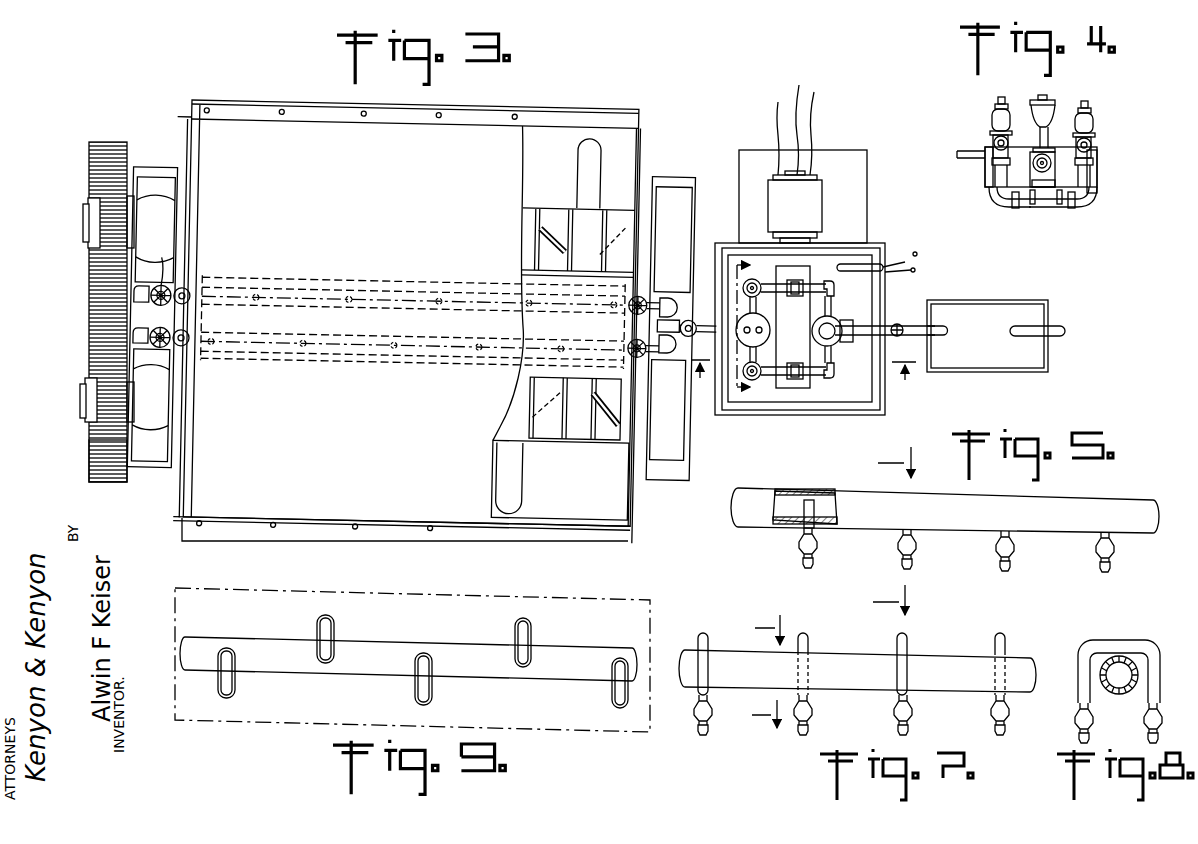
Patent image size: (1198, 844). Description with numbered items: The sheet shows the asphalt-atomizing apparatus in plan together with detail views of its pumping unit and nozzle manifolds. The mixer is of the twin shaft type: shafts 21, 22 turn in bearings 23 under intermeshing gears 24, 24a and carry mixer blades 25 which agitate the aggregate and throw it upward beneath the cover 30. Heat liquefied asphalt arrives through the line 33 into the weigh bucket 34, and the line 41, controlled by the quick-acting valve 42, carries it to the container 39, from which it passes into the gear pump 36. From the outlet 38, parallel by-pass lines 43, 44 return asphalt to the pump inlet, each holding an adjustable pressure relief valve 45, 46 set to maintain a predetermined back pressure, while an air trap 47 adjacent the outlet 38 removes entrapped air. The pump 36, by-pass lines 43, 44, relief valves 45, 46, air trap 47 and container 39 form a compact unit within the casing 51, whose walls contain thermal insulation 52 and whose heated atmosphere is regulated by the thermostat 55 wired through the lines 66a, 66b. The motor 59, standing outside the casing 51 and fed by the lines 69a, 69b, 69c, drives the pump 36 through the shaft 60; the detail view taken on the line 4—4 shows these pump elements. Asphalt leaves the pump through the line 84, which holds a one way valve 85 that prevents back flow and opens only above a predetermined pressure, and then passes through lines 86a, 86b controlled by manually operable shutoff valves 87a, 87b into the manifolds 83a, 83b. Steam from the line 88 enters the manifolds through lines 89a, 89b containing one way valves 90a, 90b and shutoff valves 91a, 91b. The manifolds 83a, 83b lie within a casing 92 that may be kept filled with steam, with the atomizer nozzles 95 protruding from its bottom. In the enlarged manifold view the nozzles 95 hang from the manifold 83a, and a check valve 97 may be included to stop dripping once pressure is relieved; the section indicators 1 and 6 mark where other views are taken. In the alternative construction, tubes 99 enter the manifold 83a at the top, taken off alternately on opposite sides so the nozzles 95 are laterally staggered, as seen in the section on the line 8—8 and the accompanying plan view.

In FIG. 3, the section line 1- 1 is at (804, 387).
In FIG. 3, the line 4— 4 is at (752, 327).
In FIG. 5, the section line 6- 6 is at (884, 531).
In FIG. 7, the line 8— 8 is at (757, 671).
In FIG. 3, the shaft 21 is at (84, 399).
In FIG. 3, the shaft 22 is at (87, 224).
In FIG. 3, the bearings 23 is at (430, 341).
In FIG. 3, the intermeshing gear 24 is at (94, 278).
In FIG. 3, the intermeshing gear 24a is at (96, 454).
In FIG. 3, the mixer blades 25 is at (548, 326).
In FIG. 3, the cover 30 is at (405, 304).
In FIG. 3, the line 33 is at (1062, 330).
In FIG. 3, the weigh bucket 34 is at (1014, 300).
In FIG. 3, the gear pump 36 is at (776, 395).
In FIG. 4, the gear pump 36 is at (985, 176).
In FIG. 4, the outlet 38 is at (1060, 150).
In FIG. 3, the container 39 is at (835, 342).
In FIG. 3, the line 41 is at (943, 330).
In FIG. 3, the valve 42 is at (898, 323).
In FIG. 3, the by-pass line 43 is at (830, 287).
In FIG. 4, the by-pass line 43 is at (992, 138).
In FIG. 3, the by-pass line 44 is at (830, 376).
In FIG. 4, the by-pass line 44 is at (1093, 142).
In FIG. 3, the pressure relief valve 45 is at (762, 294).
In FIG. 4, the pressure relief valve 45 is at (994, 114).
In FIG. 3, the pressure relief valve 46 is at (762, 368).
In FIG. 4, the pressure relief valve 46 is at (1095, 122).
In FIG. 3, the air trap 47 is at (771, 330).
In FIG. 4, the air trap 47 is at (1050, 106).
In FIG. 3, the casing 51 is at (837, 412).
In FIG. 3, the thermal insulation 52 is at (797, 405).
In FIG. 3, the thermostat 55 is at (880, 250).
In FIG. 3, the motor 59 is at (812, 195).
In FIG. 3, the shaft 60 is at (810, 250).
In FIG. 4, the shaft 60 is at (957, 155).
In FIG. 3, the line 66a is at (917, 254).
In FIG. 3, the line 66b is at (915, 271).
In FIG. 3, the line 69a is at (800, 88).
In FIG. 3, the line 69b is at (815, 105).
In FIG. 3, the line 69c is at (778, 112).
In FIG. 3, the manifold 83a is at (414, 277).
In FIG. 5, the manifold 83a is at (1122, 500).
In FIG. 7, the manifold 83a is at (857, 671).
In FIG. 8, the manifold 83a is at (1117, 695).
In FIG. 9, the manifold 83a is at (462, 648).
In FIG. 3, the manifold 83b is at (412, 368).
In FIG. 3, the line 84 is at (690, 300).
In FIG. 3, the one way valve 85 is at (700, 339).
In FIG. 3, the line 86a is at (678, 280).
In FIG. 3, the line 86b is at (680, 374).
In FIG. 3, the shutoff valve 87a is at (663, 266).
In FIG. 3, the shutoff valve 87b is at (660, 387).
In FIG. 3, the steam line 88 is at (150, 413).
In FIG. 3, the line 89a is at (197, 277).
In FIG. 3, the line 89b is at (199, 360).
In FIG. 3, the one way valve 90a is at (206, 257).
In FIG. 3, the one way valve 90b is at (203, 372).
In FIG. 3, the shutoff valve 91a is at (160, 240).
In FIG. 3, the shutoff valve 91b is at (215, 311).
In FIG. 3, the casing 92 is at (413, 305).
In FIG. 9, the casing 92 is at (590, 600).
In FIG. 3, the atomizer nozzles 95 is at (411, 332).
In FIG. 5, the atomizer nozzles 95 is at (802, 568).
In FIG. 7, the atomizer nozzles 95 is at (1001, 735).
In FIG. 8, the atomizer nozzles 95 is at (1118, 723).
In FIG. 7, the check valve 97 is at (795, 715).
In FIG. 7, the tubes 99 is at (851, 664).
In FIG. 8, the tubes 99 is at (1086, 644).
In FIG. 9, the tubes 99 is at (533, 640).